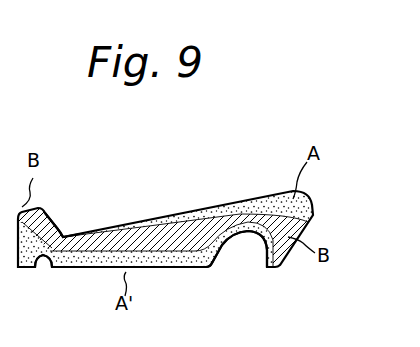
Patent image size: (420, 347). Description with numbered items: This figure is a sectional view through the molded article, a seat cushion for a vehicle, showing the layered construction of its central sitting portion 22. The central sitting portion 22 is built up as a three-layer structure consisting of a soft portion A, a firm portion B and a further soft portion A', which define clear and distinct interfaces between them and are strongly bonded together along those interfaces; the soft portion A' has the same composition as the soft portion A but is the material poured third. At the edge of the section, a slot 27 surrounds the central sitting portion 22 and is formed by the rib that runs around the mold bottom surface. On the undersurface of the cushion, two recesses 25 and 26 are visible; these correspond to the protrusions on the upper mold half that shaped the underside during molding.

The central sitting portion 22 is at (180, 213).
The recess 25 is at (247, 243).
The recess 26 is at (43, 271).
The slot 27 is at (63, 235).